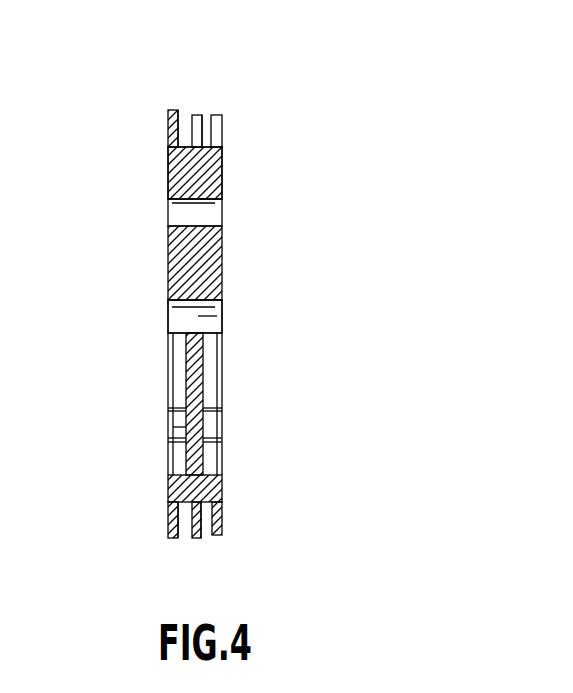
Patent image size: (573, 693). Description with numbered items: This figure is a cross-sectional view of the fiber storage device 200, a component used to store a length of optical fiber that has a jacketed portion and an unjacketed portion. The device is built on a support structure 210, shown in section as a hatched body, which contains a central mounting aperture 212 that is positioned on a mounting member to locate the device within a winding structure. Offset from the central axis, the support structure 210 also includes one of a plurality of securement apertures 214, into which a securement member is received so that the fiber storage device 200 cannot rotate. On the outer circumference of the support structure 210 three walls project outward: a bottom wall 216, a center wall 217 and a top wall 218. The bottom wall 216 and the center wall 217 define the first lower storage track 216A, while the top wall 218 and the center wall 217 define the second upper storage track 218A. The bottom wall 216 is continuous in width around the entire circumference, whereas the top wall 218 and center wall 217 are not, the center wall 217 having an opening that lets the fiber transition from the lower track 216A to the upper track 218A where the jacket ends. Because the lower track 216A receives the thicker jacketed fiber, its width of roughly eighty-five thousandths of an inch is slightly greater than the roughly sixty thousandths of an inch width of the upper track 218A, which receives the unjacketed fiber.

The fiber storage device 200 is at (367, 184).
The support structure 210 is at (222, 262).
The mounting aperture 212 is at (230, 322).
The securement apertures 214 is at (230, 194).
The bottom wall 216 is at (168, 125).
The first lower storage track 216A is at (185, 104).
The center wall 217 is at (196, 114).
The top wall 218 is at (222, 123).
The second upper storage track 218A is at (211, 104).